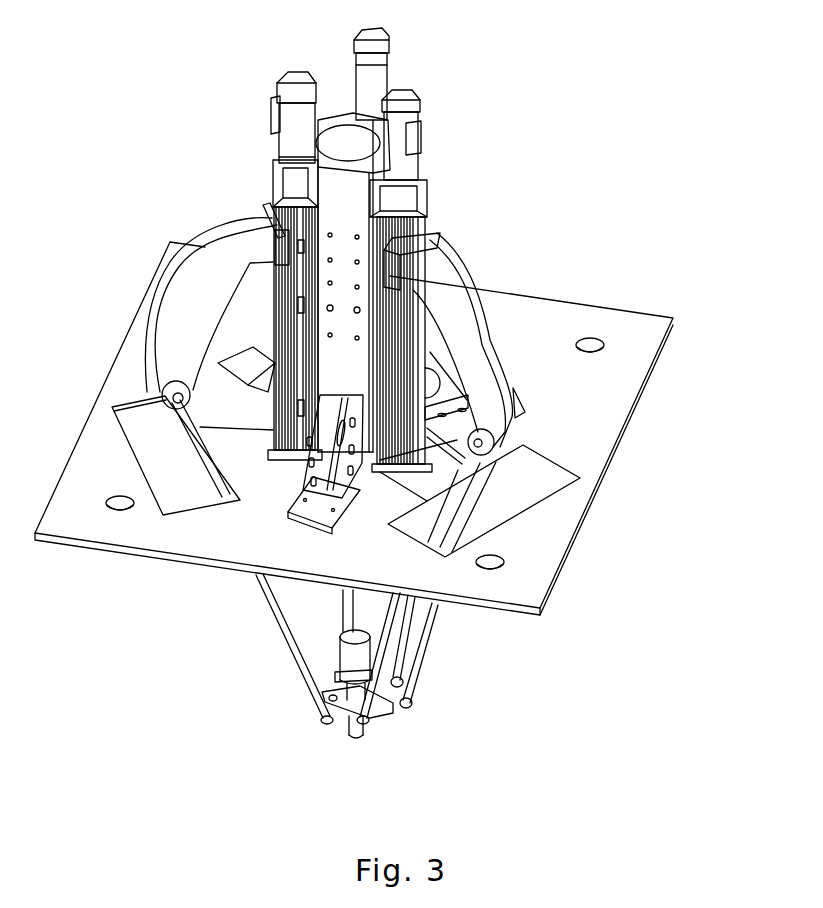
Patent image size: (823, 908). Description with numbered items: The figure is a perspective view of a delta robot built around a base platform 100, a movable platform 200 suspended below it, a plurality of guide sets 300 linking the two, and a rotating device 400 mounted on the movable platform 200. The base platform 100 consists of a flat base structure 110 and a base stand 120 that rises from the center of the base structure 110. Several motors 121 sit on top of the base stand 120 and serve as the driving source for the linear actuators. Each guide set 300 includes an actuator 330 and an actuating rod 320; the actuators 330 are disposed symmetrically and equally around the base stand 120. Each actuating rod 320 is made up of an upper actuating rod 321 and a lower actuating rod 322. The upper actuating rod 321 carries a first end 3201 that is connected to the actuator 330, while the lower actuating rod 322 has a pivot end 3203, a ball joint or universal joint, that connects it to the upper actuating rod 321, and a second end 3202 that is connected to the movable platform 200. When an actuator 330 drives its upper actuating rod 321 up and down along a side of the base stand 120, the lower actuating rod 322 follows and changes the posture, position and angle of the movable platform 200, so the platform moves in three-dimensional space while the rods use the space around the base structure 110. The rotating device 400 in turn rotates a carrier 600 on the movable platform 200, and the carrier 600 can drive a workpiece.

The base platform 100 is at (140, 165).
The base structure 110 is at (125, 378).
The base stand 120 is at (278, 208).
The motor 121 is at (296, 82).
The movable platform 200 is at (323, 690).
The guide set 300 is at (792, 403).
The actuating rod 320 is at (738, 600).
The upper actuating rod 321 is at (490, 372).
The lower actuating rod 322 is at (428, 633).
The actuator 330 is at (410, 328).
The rotating device 400 is at (345, 635).
The carrier 600 is at (352, 723).
The first end 3201 is at (442, 243).
The second end 3202 is at (370, 727).
The pivot end 3203 is at (480, 466).